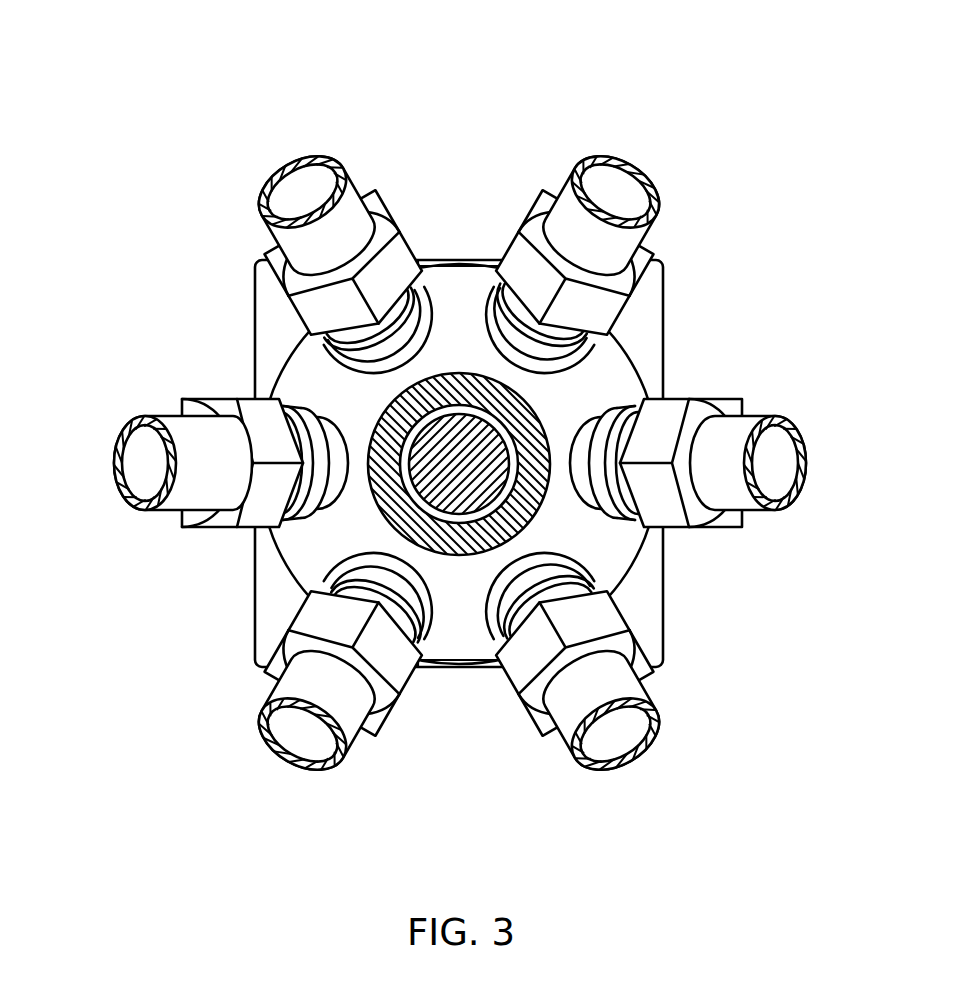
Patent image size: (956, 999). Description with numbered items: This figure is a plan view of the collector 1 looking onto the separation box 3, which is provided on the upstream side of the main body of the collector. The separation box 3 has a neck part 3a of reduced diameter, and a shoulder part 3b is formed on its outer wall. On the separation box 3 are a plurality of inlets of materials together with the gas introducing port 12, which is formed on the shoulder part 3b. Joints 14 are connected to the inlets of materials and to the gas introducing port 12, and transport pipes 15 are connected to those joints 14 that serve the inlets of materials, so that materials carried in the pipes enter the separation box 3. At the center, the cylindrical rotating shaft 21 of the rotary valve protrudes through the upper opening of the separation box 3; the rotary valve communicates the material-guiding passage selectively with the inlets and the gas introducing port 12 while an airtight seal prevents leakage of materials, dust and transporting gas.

The collector 1 is at (383, 140).
The separation box 3 is at (636, 340).
The neck part 3a is at (545, 525).
The shoulder part 3b is at (468, 277).
The gas introducing port 12 is at (301, 170).
The joint 14 is at (355, 342).
The transport pipe 15 is at (628, 177).
The rotating shaft 21 is at (505, 432).